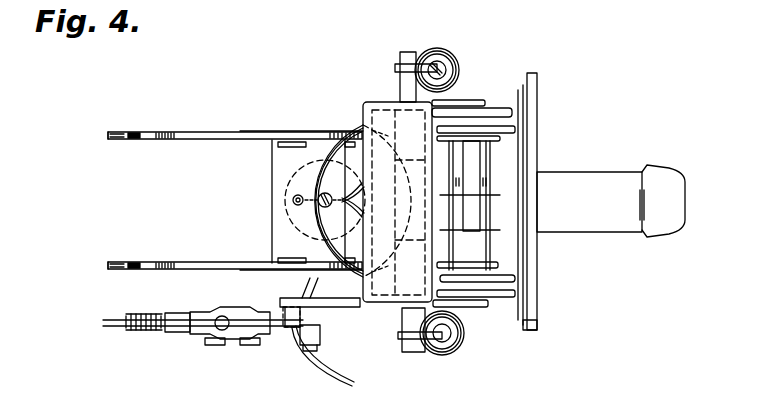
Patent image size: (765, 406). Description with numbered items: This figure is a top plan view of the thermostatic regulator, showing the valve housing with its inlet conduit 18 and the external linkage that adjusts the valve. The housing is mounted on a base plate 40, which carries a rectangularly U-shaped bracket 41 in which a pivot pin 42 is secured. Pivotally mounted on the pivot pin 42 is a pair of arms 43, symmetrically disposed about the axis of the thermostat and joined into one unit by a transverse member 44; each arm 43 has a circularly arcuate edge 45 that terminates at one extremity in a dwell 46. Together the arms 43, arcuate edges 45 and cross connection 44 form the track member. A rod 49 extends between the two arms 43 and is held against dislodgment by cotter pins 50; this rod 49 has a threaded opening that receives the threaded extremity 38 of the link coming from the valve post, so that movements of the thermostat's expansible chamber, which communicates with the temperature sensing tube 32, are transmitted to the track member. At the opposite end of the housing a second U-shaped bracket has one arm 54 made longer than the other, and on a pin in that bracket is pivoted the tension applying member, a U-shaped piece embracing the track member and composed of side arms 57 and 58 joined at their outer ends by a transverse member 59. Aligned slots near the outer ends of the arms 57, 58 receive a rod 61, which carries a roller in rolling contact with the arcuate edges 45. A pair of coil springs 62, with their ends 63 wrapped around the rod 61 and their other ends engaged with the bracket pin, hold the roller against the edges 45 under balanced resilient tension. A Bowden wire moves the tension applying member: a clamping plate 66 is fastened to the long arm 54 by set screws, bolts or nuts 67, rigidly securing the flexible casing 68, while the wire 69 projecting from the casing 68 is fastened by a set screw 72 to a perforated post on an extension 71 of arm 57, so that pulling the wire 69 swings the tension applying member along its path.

The conduit 18 is at (585, 187).
The tube 32 is at (329, 380).
The threaded extremity of link 38 is at (327, 193).
The base plate 40 is at (530, 135).
The rectangularly U-shaped bracket 41 is at (524, 115).
The pivot pin 42 is at (480, 185).
The arms 43 is at (195, 138).
The transverse member 44 is at (274, 204).
The circularly arcuate edge 45 is at (250, 121).
The dwell 46 is at (137, 140).
The rod 49 is at (321, 148).
The cotter pins 50 is at (284, 143).
The long arm of bracket 54 is at (352, 307).
The side arm of tension applying member 57 is at (480, 307).
The side arm of tension applying member 58 is at (455, 101).
The transverse member 59 is at (374, 150).
The rod 61 is at (412, 64).
The coil springs 62 is at (445, 52).
The spring end 63 is at (496, 113).
The clamping plate 66 is at (221, 335).
The set screws, bolts and nuts 67 is at (250, 340).
The flexible casing 68 is at (151, 331).
The wire 69 is at (283, 326).
The extension 71 is at (318, 328).
The set screw 72 is at (305, 342).